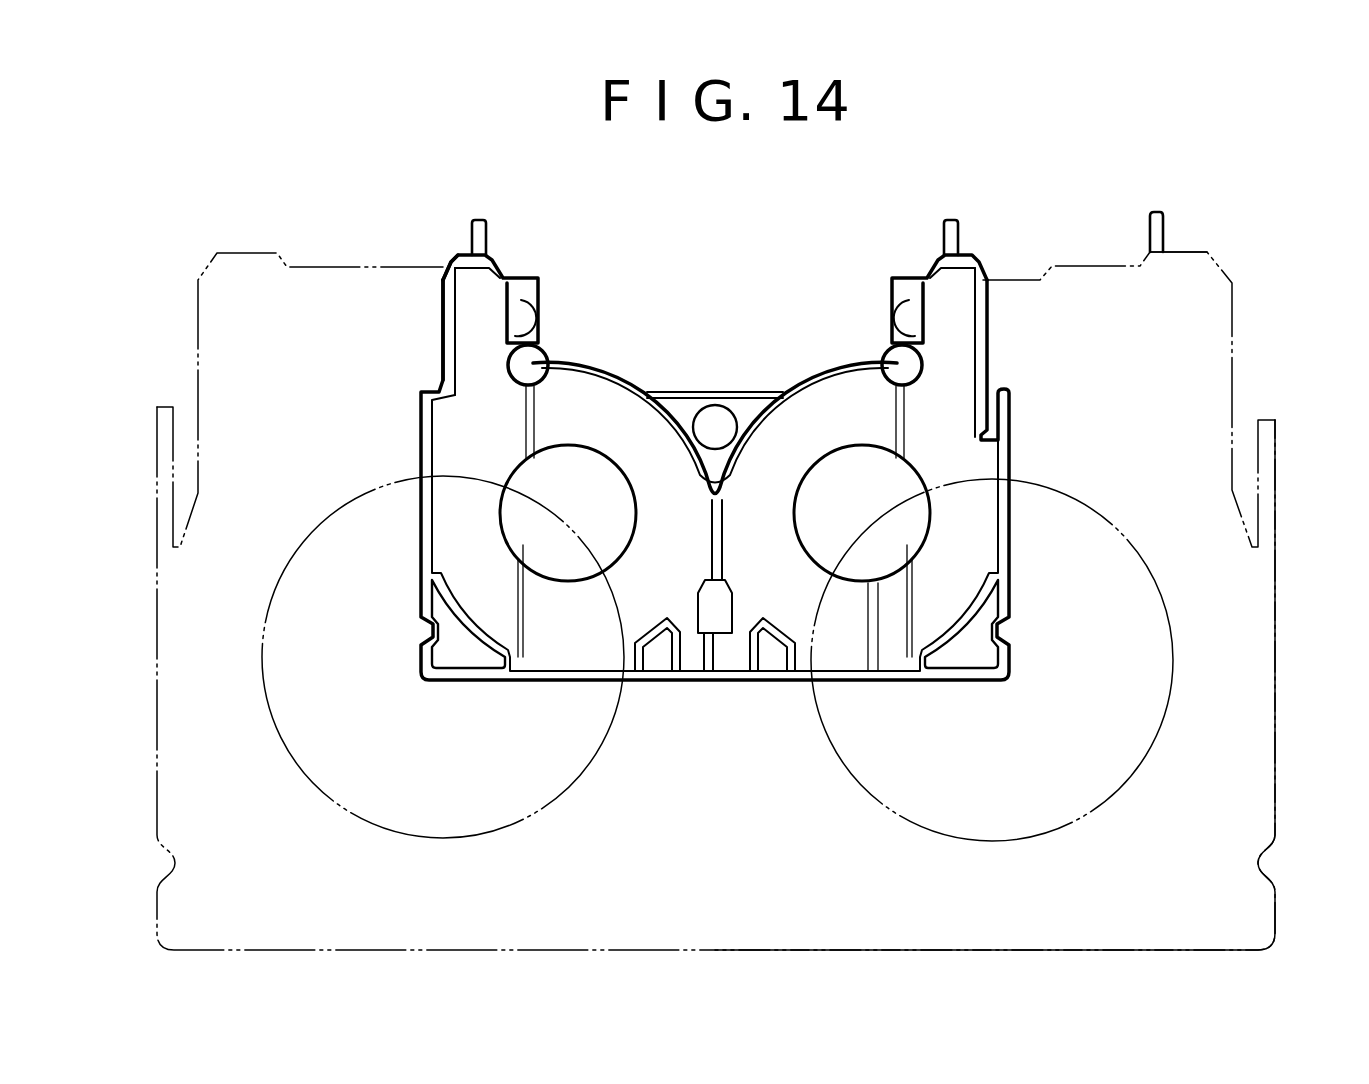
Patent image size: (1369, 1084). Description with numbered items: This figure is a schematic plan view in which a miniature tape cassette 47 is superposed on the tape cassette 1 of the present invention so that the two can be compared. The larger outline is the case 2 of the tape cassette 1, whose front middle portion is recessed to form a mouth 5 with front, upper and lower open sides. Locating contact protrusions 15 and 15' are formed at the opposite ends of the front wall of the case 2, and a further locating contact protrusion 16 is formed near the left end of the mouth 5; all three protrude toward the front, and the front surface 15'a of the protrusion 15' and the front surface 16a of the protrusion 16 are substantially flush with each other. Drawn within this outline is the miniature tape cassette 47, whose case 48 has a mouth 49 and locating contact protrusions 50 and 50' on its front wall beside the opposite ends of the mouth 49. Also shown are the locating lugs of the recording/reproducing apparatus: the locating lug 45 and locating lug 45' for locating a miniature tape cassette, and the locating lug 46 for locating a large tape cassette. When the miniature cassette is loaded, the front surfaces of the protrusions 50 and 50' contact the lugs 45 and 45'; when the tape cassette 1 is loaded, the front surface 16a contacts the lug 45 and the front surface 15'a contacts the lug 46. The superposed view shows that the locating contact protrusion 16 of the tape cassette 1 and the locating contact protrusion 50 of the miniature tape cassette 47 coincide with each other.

The tape cassette 1 is at (1275, 641).
The case 2 is at (1275, 723).
The mouth 5 is at (604, 383).
The locating contact protrusion 15 is at (300, 368).
The locating contact protrusion 15' is at (1132, 384).
The front surface 15'a is at (1216, 217).
The locating contact protrusion 16 is at (455, 260).
The front surface 16a is at (465, 250).
The locating lug 45 is at (514, 222).
The locating lug 45' is at (904, 237).
The locating lug 46 is at (1164, 220).
The miniature tape cassette 47 is at (1011, 430).
The case 48 is at (1011, 553).
The mouth 49 is at (826, 383).
The locating contact protrusion 50 is at (507, 282).
The locating contact protrusion 50' is at (958, 268).